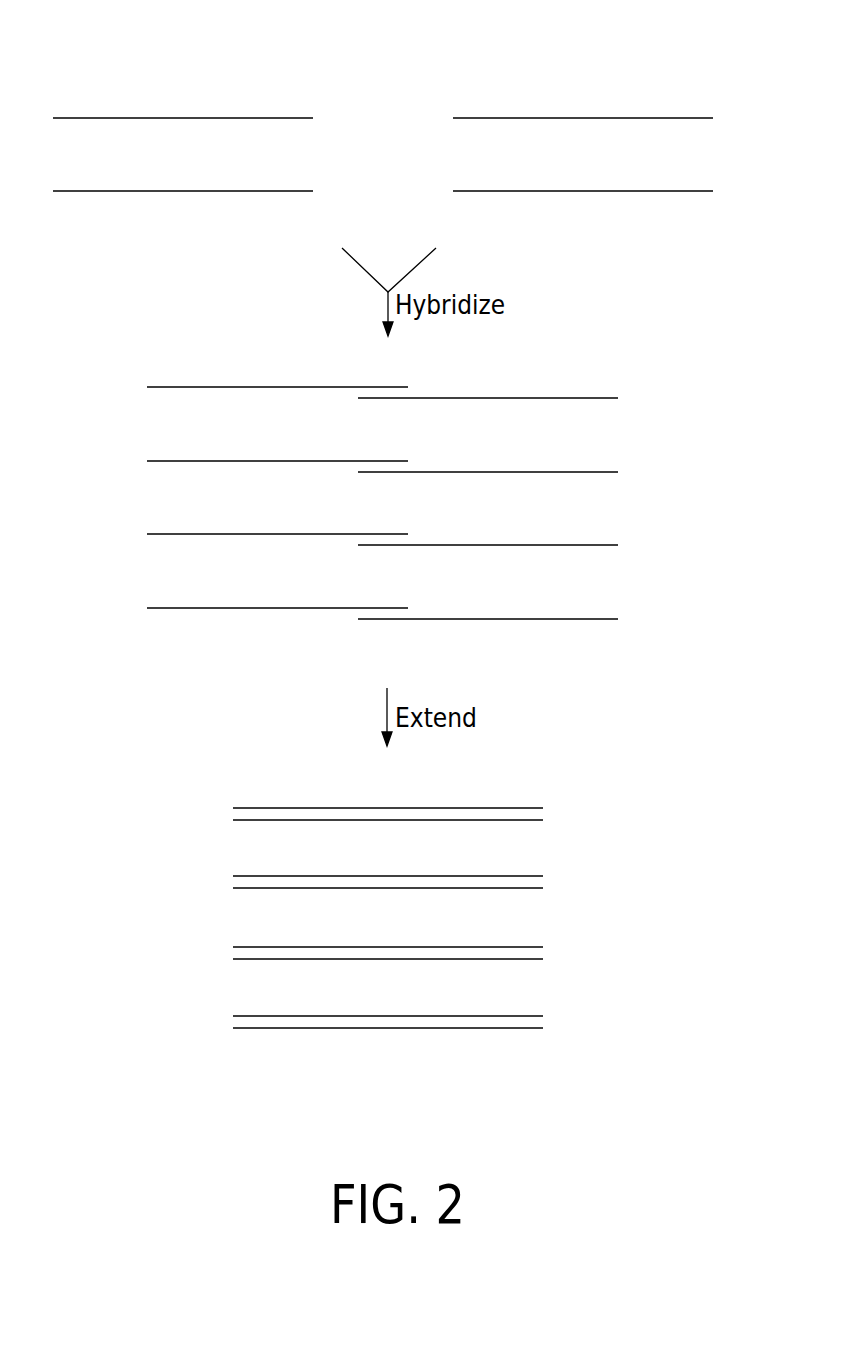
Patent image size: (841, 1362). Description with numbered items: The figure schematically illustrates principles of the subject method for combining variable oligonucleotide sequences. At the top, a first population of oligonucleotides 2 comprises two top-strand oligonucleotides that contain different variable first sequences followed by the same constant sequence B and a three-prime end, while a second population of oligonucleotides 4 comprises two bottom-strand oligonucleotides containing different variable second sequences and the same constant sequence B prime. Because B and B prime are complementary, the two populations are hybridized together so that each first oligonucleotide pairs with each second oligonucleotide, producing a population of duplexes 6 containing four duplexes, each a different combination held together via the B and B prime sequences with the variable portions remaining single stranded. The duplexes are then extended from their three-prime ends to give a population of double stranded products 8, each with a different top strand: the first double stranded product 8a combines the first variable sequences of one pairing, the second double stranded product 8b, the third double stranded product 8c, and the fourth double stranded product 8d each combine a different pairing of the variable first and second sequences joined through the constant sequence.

The first population of oligonucleotides 2 is at (242, 40).
The second population of oligonucleotides 4 is at (620, 38).
The population of duplexes 6 is at (674, 385).
The population of double stranded products 8 is at (402, 901).
The first double stranded product 8a is at (243, 807).
The second double stranded product 8b is at (243, 875).
The third double stranded product 8c is at (243, 946).
The fourth double stranded product 8d is at (243, 1015).